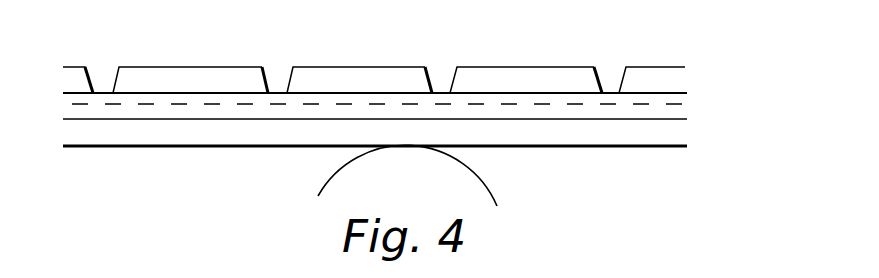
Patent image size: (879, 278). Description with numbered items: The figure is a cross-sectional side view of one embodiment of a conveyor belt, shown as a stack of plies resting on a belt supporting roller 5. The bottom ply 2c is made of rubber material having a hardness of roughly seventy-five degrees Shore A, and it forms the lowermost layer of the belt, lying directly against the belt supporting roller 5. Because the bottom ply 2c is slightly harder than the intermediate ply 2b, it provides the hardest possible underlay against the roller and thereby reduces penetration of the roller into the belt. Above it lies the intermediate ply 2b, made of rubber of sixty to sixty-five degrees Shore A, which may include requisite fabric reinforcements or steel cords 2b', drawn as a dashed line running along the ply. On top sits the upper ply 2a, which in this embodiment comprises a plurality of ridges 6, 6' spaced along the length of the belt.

The upper ply 2a is at (675, 80).
The intermediate ply 2b is at (419, 104).
The steel cords 2b' is at (379, 156).
The bottom ply 2c is at (680, 132).
The belt supporting roller 5 is at (463, 183).
The ridge 6 is at (567, 51).
The ridge 6' is at (272, 51).